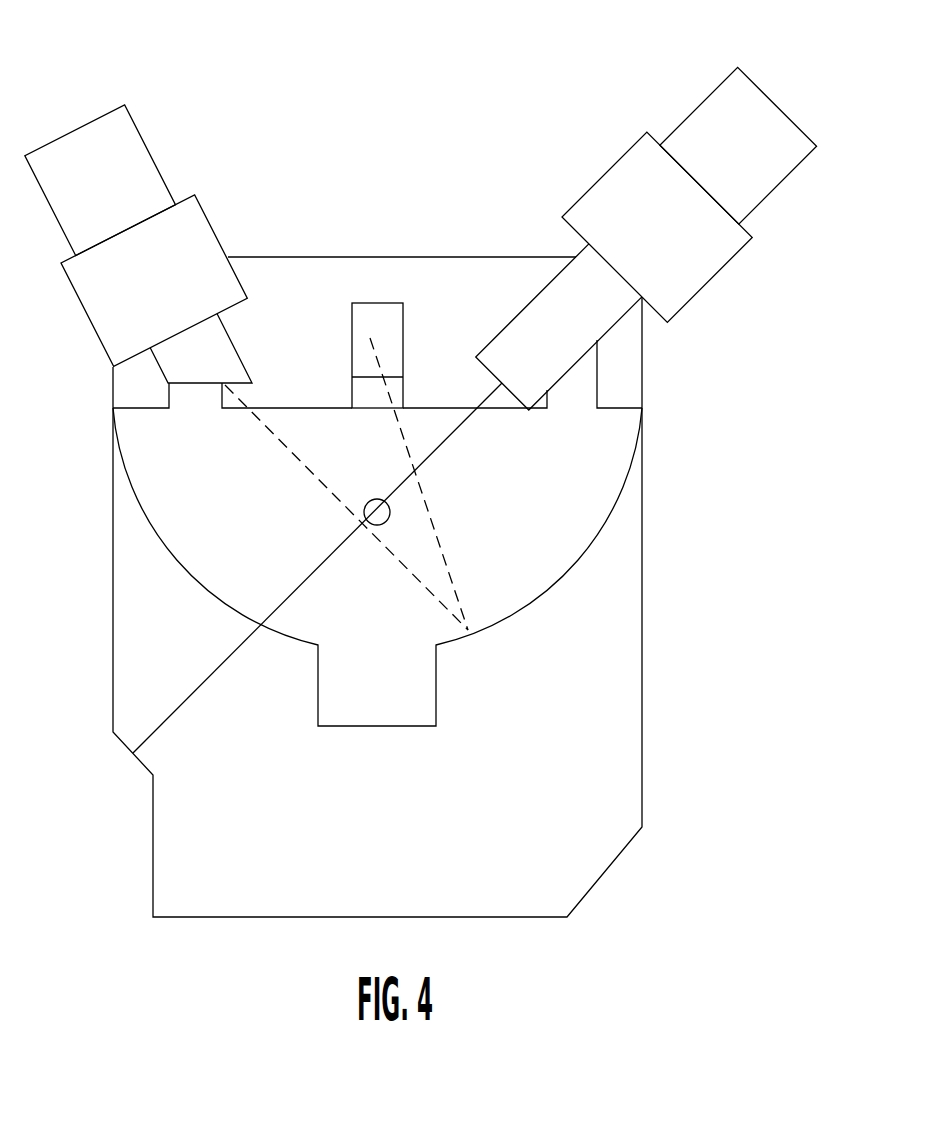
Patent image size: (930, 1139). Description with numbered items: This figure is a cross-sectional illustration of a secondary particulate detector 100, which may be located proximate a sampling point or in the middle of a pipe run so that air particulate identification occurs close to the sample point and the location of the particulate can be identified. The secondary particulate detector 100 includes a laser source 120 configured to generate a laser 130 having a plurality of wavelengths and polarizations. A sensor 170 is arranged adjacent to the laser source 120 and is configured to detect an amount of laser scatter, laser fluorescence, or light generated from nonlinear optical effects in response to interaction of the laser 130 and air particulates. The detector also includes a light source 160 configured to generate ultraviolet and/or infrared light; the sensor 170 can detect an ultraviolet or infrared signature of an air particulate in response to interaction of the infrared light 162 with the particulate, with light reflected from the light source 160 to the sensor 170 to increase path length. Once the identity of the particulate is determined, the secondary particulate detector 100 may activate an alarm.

The secondary particulate detector 100 is at (181, 88).
The laser source 120 is at (750, 123).
The laser 130 is at (313, 570).
The light source 160 is at (205, 248).
The infrared light 162 is at (438, 532).
The sensor 170 is at (370, 338).